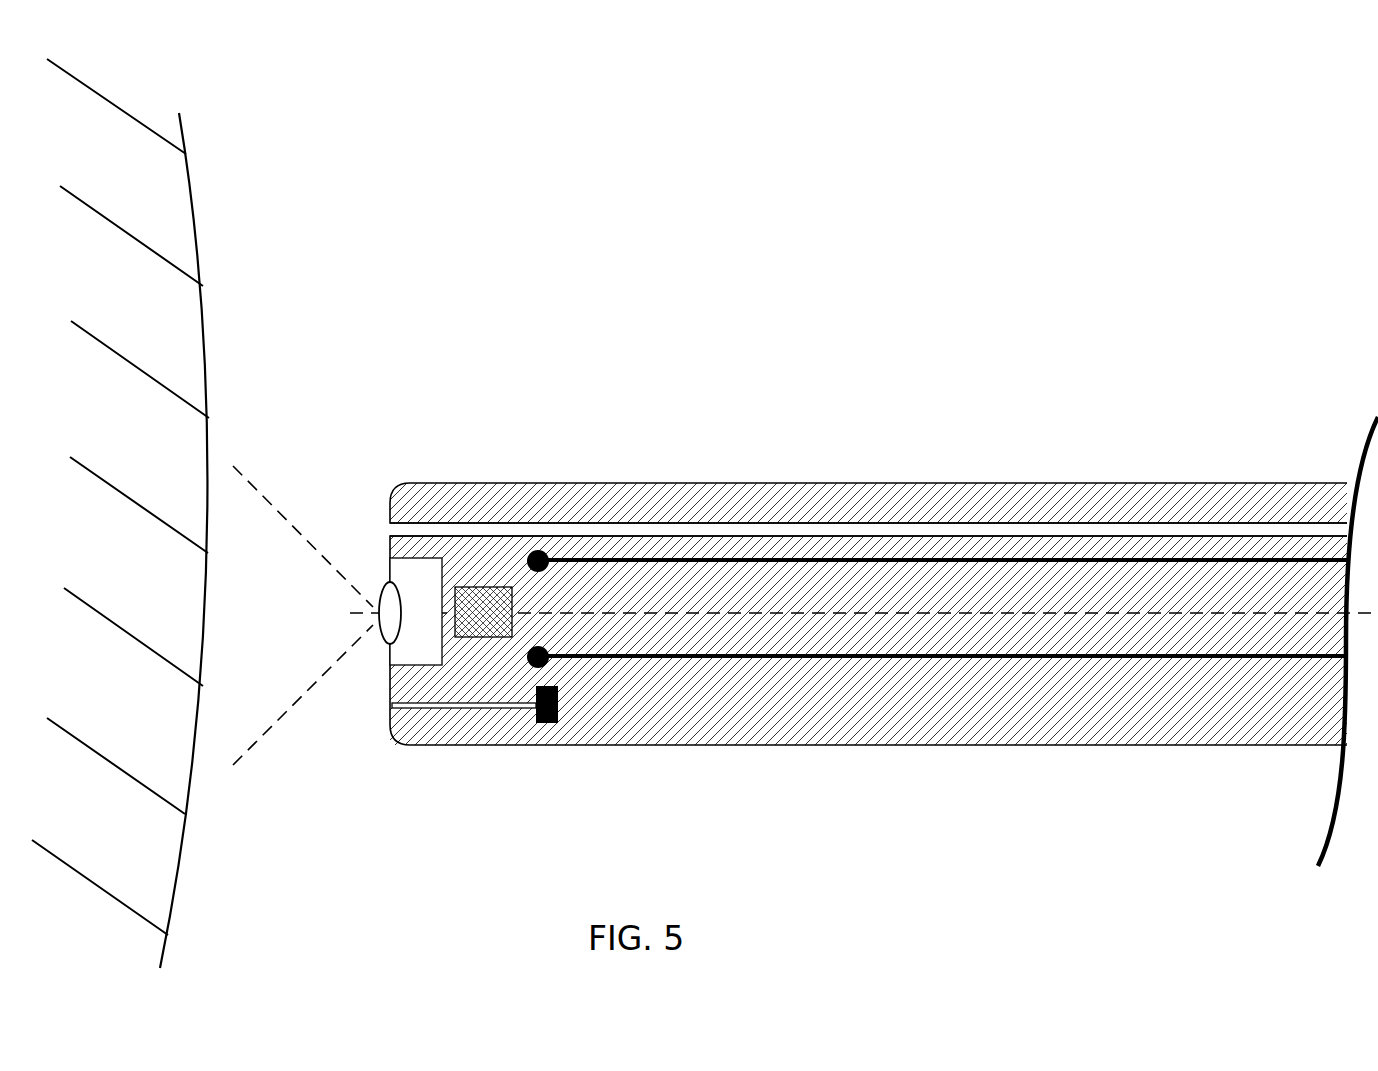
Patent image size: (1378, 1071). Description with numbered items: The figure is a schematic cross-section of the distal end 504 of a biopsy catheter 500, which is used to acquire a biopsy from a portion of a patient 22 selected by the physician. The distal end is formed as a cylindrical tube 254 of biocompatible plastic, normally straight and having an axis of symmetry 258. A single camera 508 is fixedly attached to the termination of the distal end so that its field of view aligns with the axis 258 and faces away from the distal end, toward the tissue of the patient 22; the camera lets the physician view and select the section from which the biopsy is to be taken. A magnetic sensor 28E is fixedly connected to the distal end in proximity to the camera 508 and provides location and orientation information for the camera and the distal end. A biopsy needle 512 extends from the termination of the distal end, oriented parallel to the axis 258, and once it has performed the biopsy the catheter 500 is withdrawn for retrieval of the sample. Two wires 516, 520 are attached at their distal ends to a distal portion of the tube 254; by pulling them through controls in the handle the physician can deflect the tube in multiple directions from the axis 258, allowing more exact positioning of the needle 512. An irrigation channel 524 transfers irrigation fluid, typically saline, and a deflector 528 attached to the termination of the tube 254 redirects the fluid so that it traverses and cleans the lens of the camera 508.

The patient 22 is at (195, 806).
The magnetic sensor 28E is at (487, 587).
The cylindrical tube 254 is at (818, 745).
The axis of symmetry 258 is at (1022, 614).
The biopsy catheter 500 is at (390, 852).
The distal end 504 is at (537, 878).
The camera 508 is at (392, 655).
The biopsy needle 512 is at (455, 706).
The wire 516 is at (885, 655).
The wire 520 is at (937, 560).
The irrigation channel 524 is at (698, 523).
The deflector 528 is at (391, 523).